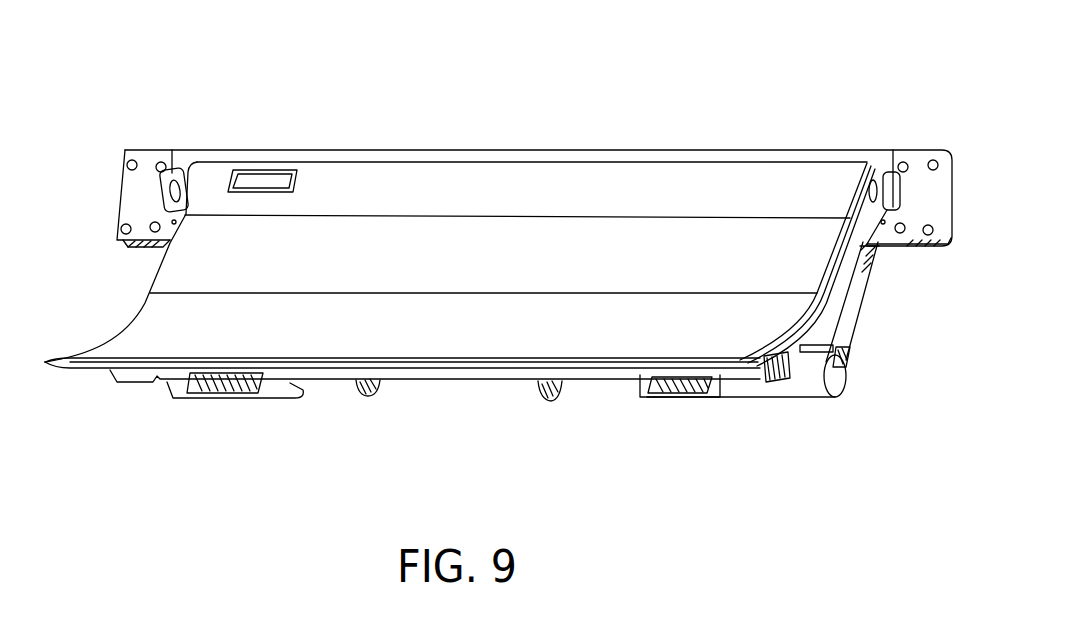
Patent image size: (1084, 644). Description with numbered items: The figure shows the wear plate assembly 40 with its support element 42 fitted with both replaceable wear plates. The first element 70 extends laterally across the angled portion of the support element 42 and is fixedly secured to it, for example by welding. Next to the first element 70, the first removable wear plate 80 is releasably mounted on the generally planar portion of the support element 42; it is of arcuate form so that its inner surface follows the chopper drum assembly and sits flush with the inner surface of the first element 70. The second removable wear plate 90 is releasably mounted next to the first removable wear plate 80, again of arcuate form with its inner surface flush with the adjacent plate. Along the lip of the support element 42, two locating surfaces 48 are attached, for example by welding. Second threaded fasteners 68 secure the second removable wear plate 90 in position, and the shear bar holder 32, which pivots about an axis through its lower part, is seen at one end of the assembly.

The wear plate assembly 40 is at (733, 86).
The first element 70 is at (530, 200).
The first removable wear plate 80 is at (404, 278).
The second removable wear plate 90 is at (290, 342).
The locating surface 48 is at (220, 398).
The second threaded fastener 68 is at (366, 396).
The shear bar holder 32 is at (862, 313).
The support element 42 is at (767, 375).